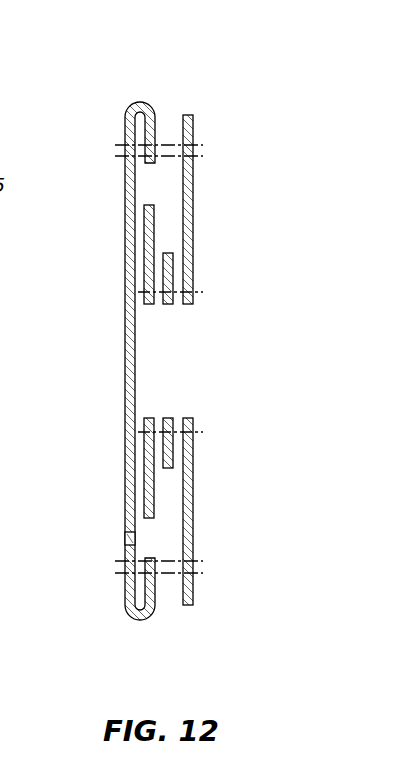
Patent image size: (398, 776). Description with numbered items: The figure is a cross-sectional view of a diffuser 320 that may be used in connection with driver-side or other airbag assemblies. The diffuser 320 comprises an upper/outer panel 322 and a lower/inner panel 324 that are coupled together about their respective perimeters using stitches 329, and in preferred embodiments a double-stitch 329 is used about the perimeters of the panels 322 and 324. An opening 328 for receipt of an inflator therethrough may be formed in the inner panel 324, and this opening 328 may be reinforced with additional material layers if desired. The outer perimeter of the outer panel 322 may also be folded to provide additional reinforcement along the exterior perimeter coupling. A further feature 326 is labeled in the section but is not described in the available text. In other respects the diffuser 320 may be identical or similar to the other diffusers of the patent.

The diffuser 320 is at (106, 94).
The upper/outer panel 322 is at (125, 405).
The lower/inner panel 324 is at (193, 473).
The weld joint 326 is at (126, 541).
The opening 328 is at (186, 304).
The stitches 329 is at (168, 145).